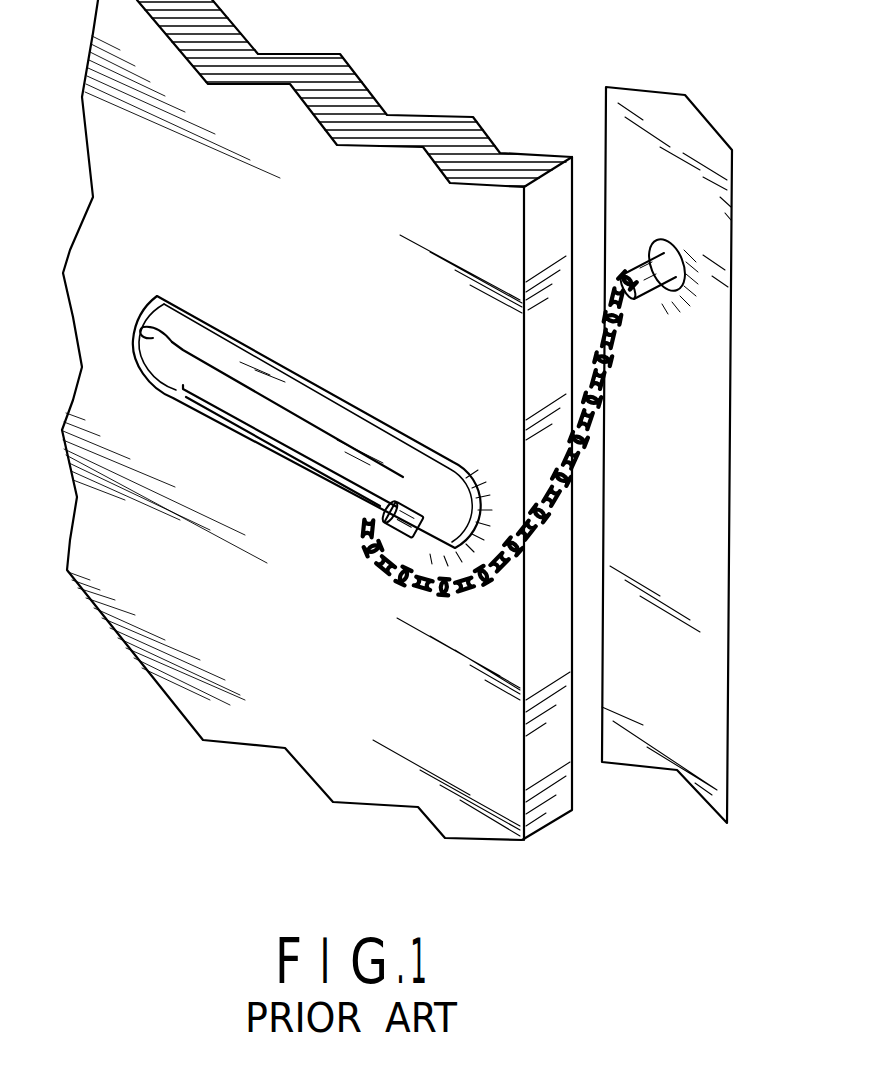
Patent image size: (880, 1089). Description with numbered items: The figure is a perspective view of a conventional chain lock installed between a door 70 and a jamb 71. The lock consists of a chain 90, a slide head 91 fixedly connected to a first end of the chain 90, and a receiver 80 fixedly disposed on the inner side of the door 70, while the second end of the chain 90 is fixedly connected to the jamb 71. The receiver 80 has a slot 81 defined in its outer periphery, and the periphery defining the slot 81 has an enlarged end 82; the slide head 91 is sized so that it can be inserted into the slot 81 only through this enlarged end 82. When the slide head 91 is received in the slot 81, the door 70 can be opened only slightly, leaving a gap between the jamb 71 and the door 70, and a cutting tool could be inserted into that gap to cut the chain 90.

The door 70 is at (402, 163).
The jamb 71 is at (710, 578).
The receiver 80 is at (327, 483).
The slot 81 is at (290, 420).
The enlarged end 82 is at (142, 330).
The chain 90 is at (598, 445).
The slide head 91 is at (397, 480).